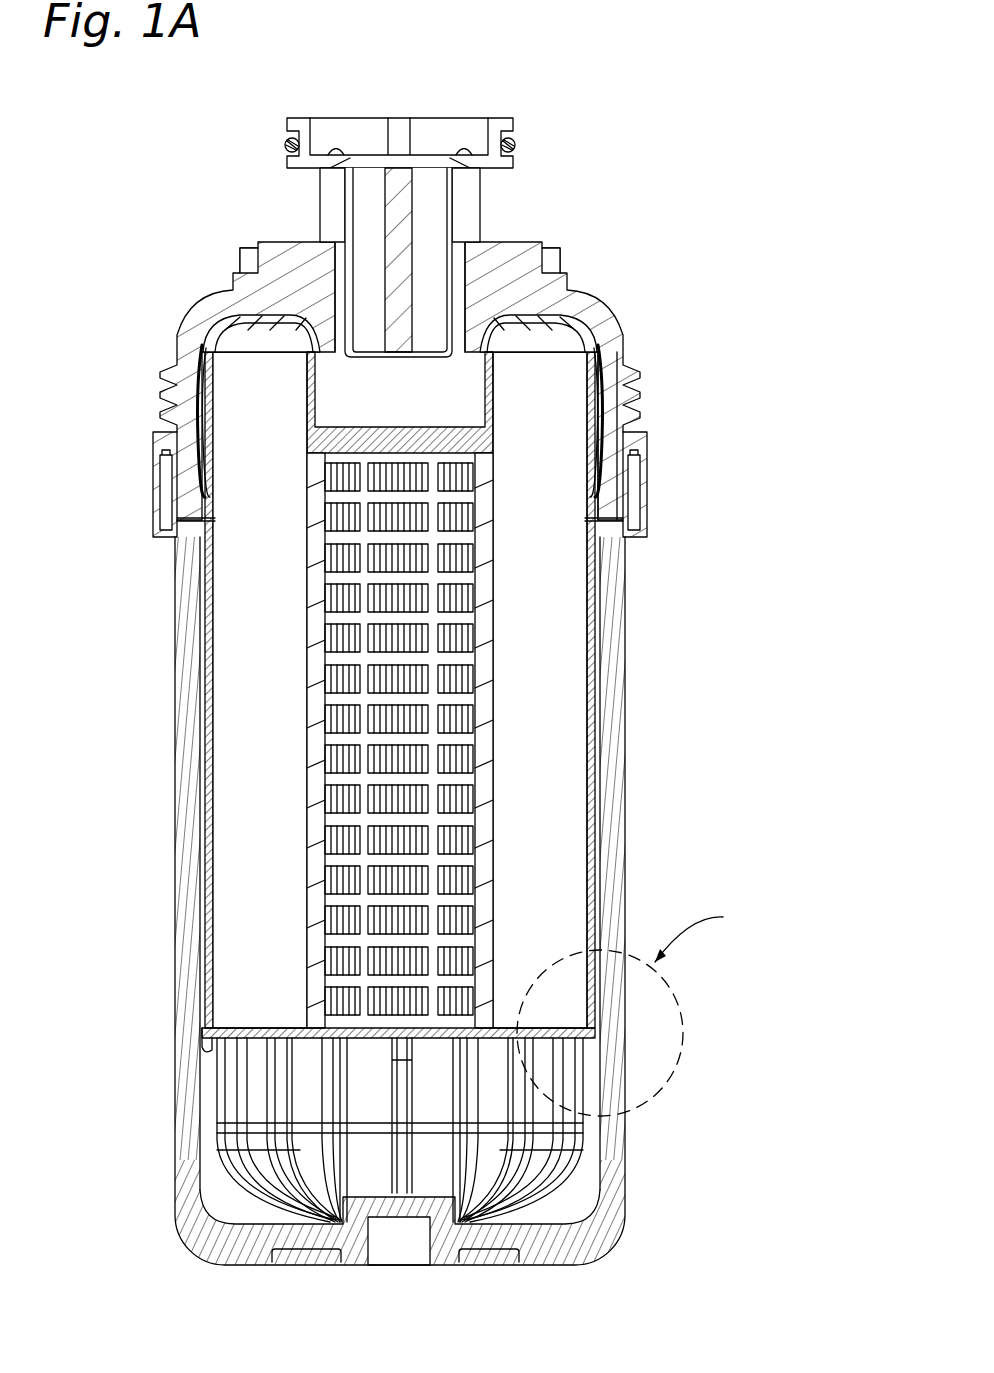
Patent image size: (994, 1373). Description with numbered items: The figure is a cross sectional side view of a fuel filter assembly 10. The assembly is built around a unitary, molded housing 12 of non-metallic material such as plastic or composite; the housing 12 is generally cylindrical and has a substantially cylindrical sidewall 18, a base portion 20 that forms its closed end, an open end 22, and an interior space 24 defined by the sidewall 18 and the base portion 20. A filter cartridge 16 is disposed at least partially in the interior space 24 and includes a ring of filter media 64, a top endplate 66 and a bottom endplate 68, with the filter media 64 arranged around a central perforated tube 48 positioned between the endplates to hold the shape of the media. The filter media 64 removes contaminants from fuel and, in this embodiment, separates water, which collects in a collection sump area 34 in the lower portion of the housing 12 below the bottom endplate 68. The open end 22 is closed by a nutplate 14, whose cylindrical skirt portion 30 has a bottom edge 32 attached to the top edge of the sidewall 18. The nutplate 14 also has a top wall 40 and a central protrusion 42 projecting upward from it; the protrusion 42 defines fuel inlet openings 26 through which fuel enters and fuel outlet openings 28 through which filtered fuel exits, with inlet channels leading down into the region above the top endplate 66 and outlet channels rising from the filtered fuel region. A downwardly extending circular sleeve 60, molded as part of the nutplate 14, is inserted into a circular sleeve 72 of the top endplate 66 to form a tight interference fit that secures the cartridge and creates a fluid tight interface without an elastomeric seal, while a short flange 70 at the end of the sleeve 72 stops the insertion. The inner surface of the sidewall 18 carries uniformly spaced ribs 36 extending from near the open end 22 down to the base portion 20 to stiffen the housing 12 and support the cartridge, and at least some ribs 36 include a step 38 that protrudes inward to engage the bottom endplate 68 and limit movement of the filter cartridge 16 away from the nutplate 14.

The fuel filter assembly 10 is at (474, 684).
The housing 12 is at (412, 831).
The nutplate 14 is at (405, 374).
The filter cartridge 16 is at (207, 658).
The sidewall 18 is at (627, 717).
The base portion 20 is at (487, 1264).
The open end 22 is at (613, 535).
The interior space 24 is at (568, 620).
The fuel inlet openings 26 is at (333, 205).
The fuel outlet openings 28 is at (347, 150).
The cylindrical skirt portion 30 is at (617, 353).
The bottom edge 32 is at (643, 463).
The collection sump area 34 is at (570, 1197).
The ribs 36 is at (247, 1200).
The step 38 is at (203, 1047).
The top wall 40 is at (290, 258).
The central protrusion 42 is at (396, 113).
The central perforated tube 48 is at (483, 810).
The sleeve 60 is at (570, 320).
The filter media 64 is at (228, 730).
The top endplate 66 is at (220, 330).
The bottom endplate 68 is at (247, 1027).
The flange 70 is at (318, 447).
The sleeve 72 is at (333, 390).